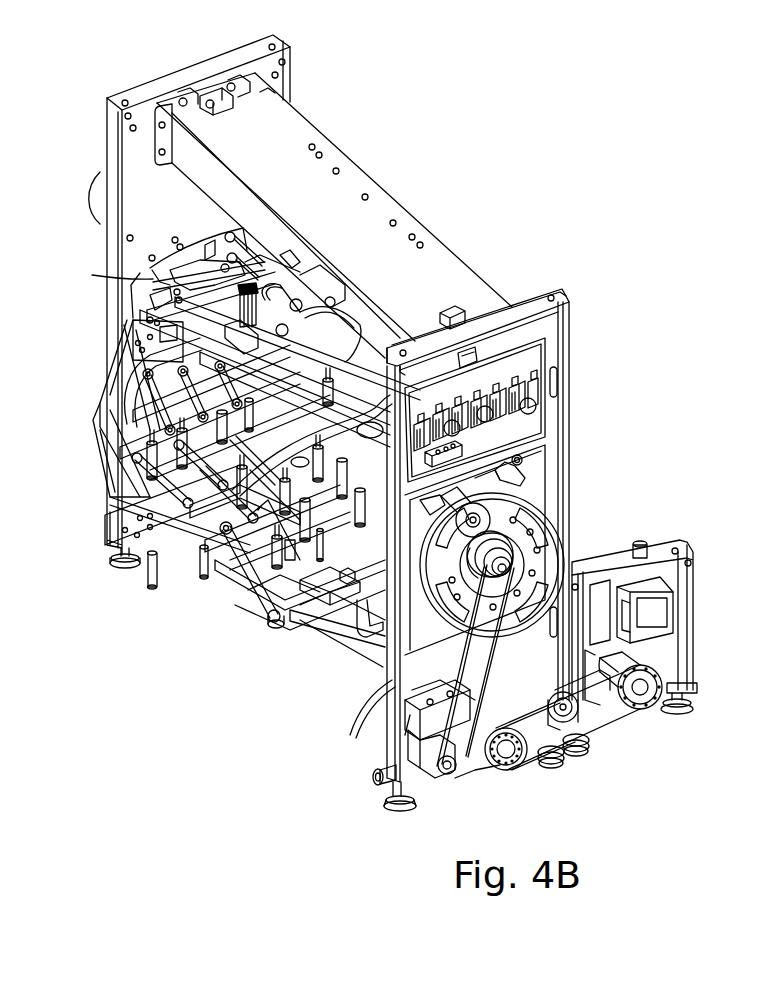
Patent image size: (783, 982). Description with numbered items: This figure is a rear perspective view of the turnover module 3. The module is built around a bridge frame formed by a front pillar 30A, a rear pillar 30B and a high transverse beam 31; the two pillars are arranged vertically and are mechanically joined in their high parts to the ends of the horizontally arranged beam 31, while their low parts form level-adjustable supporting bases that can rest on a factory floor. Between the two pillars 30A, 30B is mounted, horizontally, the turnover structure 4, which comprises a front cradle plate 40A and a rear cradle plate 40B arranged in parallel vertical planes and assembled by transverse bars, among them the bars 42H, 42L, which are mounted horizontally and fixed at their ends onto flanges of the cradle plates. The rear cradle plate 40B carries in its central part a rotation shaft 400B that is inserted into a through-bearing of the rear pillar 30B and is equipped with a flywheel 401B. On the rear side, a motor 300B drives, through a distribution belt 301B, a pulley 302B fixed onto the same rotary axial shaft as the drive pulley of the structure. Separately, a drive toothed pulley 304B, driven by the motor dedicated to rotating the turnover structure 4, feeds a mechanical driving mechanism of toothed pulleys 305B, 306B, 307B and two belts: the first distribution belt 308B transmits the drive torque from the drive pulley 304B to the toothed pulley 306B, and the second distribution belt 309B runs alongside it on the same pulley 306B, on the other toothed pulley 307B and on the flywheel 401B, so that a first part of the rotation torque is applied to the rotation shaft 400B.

The turnover module 3 is at (318, 110).
The front pillar 30A is at (285, 70).
The rear pillar 30B is at (546, 293).
The high transverse beam 31 is at (358, 180).
The turnover structure 4 is at (98, 498).
The front cradle plate 40A is at (190, 256).
The rear cradle plate 40B is at (237, 535).
The transverse bar 42H is at (150, 276).
The transverse bar 42L is at (318, 628).
The motor 300B is at (415, 716).
The distribution belt 301B is at (390, 680).
The pulley 302B is at (508, 565).
The drive toothed pulley 304B is at (647, 684).
The toothed pulley 305B is at (572, 704).
The toothed pulley 306B is at (503, 752).
The toothed pulley 307B is at (545, 623).
The first distribution belt 308B is at (583, 728).
The second distribution belt 309B is at (541, 746).
The rotation shaft 400B is at (523, 520).
The flywheel 401B is at (382, 633).